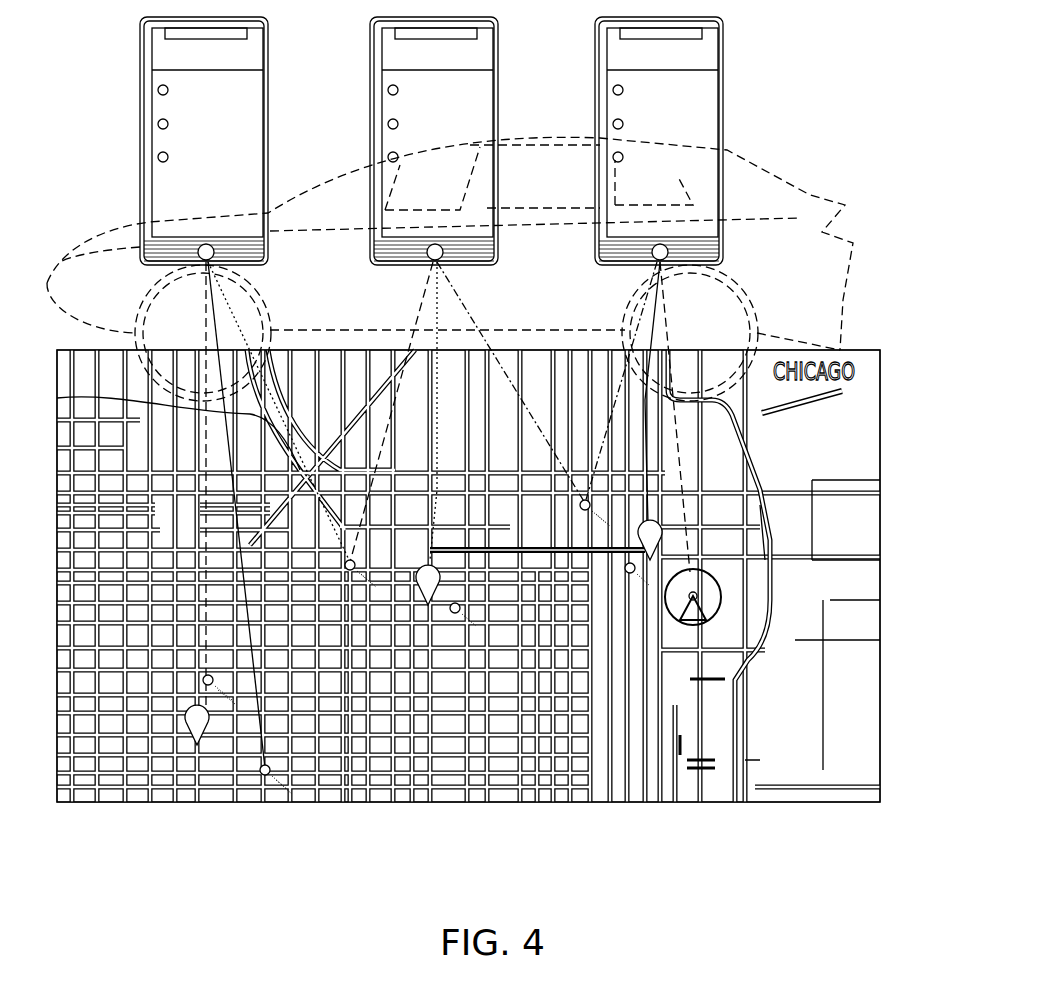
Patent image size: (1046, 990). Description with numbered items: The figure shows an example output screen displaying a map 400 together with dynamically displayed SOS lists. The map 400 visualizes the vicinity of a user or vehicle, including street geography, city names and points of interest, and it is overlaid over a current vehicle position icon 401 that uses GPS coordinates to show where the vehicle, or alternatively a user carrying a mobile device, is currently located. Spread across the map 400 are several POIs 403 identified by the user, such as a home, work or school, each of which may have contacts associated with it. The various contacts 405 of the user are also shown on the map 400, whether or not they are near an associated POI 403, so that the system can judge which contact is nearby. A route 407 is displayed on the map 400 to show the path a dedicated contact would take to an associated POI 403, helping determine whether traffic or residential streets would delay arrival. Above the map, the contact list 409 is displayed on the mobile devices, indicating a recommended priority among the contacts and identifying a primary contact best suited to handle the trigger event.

The map 400 is at (895, 181).
The current vehicle position icon 401 is at (722, 597).
The point of interest 403 is at (196, 745).
The contact 405 is at (583, 500).
The route 407 is at (540, 556).
The contact list 409 is at (268, 63).